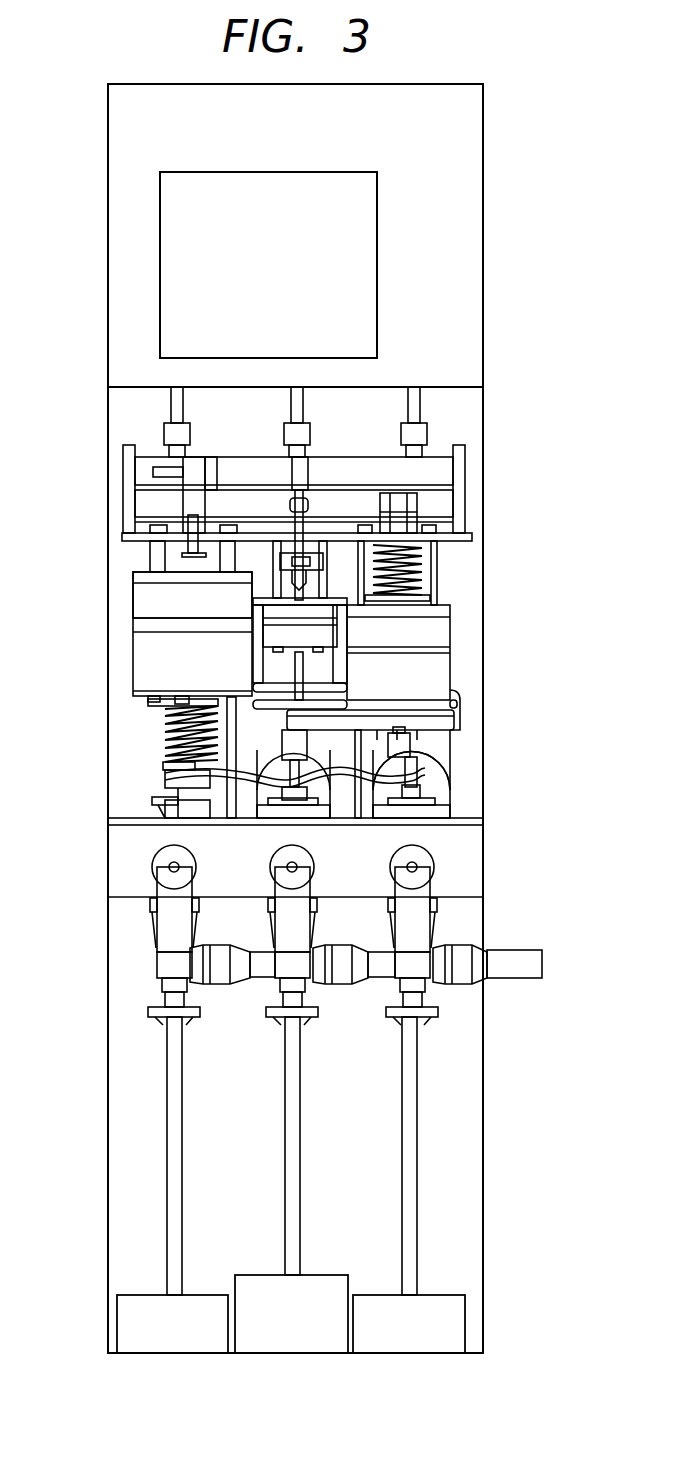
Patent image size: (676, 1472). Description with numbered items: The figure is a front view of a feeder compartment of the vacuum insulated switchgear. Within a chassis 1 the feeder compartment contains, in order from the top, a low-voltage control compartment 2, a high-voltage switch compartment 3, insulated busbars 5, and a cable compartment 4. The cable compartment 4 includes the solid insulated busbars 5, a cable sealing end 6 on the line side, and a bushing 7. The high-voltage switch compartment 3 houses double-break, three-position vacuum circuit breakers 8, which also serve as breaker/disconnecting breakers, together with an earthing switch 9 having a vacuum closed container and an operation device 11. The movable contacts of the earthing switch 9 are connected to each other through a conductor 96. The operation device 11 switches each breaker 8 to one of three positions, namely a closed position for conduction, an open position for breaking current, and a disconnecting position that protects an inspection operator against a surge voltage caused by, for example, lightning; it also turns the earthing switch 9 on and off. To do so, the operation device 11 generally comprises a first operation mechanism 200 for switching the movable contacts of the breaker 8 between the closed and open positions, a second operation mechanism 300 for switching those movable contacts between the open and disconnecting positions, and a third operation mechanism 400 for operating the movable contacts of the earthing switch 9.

The chassis 1 is at (494, 180).
The low-voltage control compartment 2 is at (465, 277).
The high-voltage switch compartment 3 is at (463, 410).
The cable compartment 4 is at (458, 1109).
The insulated busbar 5 is at (438, 1011).
The cable sealing end 6 is at (434, 867).
The bushing 7 is at (465, 1323).
The double-break, three-position vacuum circuit breaker 8 is at (463, 760).
The earthing switch 9 is at (466, 813).
The operation device 11 is at (122, 610).
The conductor 96 is at (240, 772).
The first operation mechanism 200 is at (124, 657).
The second operation mechanism 300 is at (350, 632).
The third operation mechanism 400 is at (466, 624).